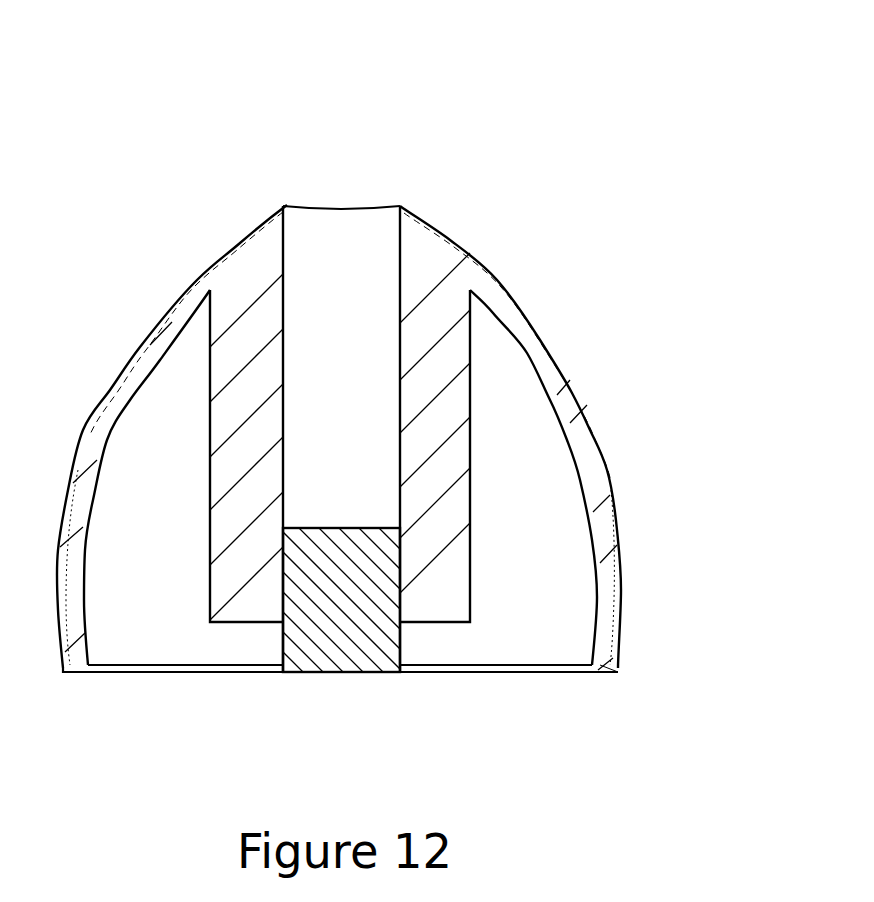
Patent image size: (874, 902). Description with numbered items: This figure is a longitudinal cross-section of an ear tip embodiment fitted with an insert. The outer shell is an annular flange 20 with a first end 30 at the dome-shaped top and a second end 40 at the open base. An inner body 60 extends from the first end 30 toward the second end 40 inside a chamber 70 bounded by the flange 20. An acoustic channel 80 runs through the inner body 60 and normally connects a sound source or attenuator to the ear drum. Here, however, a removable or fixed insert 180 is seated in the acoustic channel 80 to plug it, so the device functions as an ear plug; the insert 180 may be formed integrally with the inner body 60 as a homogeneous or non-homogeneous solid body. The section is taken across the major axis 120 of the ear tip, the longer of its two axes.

The annular flange 20 is at (571, 393).
The first end 30 is at (260, 199).
The second end 40 is at (617, 672).
The inner body 60 is at (433, 372).
The chamber 70 is at (533, 603).
The acoustic channel 80 is at (337, 262).
The major axis 120 is at (148, 666).
The insert 180 is at (333, 632).